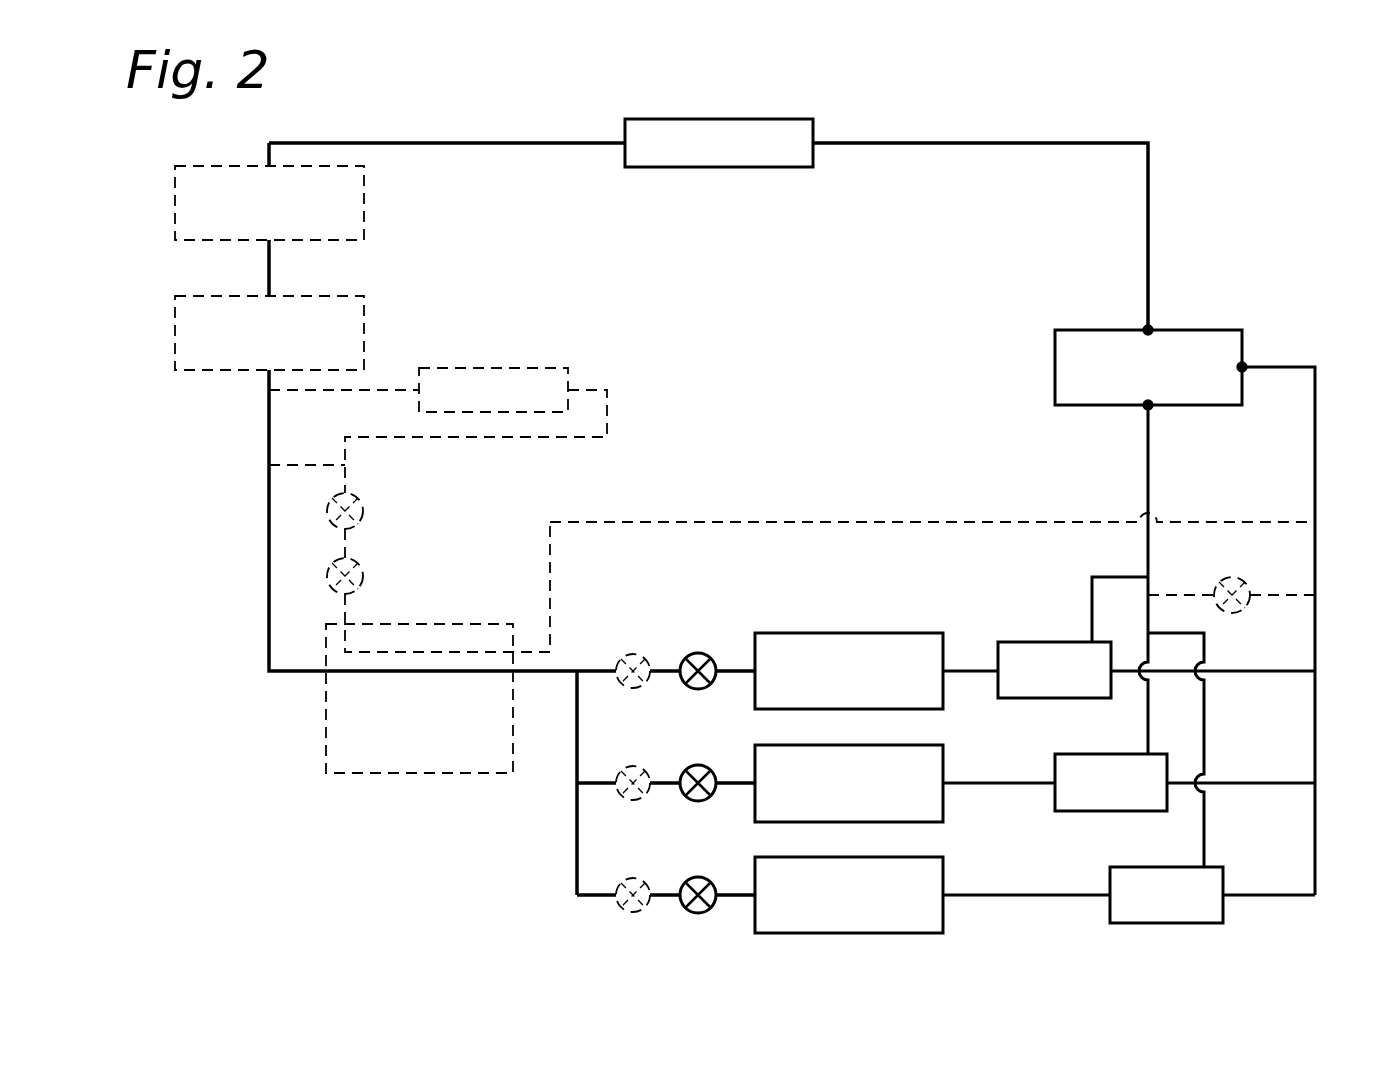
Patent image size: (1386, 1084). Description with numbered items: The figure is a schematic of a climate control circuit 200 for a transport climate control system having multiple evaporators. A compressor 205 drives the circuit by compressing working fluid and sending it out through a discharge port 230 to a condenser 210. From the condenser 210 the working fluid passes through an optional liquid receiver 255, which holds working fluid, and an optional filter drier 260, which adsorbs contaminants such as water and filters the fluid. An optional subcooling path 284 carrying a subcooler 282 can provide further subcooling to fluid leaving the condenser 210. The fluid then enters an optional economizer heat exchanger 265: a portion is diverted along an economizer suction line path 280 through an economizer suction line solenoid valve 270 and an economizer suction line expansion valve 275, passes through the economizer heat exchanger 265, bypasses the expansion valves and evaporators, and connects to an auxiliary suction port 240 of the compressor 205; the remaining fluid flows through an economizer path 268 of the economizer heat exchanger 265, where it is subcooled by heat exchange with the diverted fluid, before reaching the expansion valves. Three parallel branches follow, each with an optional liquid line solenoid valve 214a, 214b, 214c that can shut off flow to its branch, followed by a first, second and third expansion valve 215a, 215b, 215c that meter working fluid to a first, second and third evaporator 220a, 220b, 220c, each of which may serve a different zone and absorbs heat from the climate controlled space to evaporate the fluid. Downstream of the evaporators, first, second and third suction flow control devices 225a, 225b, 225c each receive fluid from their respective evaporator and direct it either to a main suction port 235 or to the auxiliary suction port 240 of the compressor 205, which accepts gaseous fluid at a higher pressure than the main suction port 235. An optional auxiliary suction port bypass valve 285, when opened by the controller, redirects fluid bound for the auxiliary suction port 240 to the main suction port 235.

The climate control circuit 200 is at (1273, 153).
The compressor 205 is at (1172, 345).
The condenser 210 is at (648, 119).
The first liquid line solenoid valve 214a is at (627, 654).
The second liquid line solenoid valve 214b is at (627, 766).
The third liquid line solenoid valve 214c is at (627, 879).
The first expansion valve 215a is at (710, 688).
The second expansion valve 215b is at (710, 800).
The third expansion valve 215c is at (710, 912).
The first evaporator 220a is at (927, 633).
The second evaporator 220b is at (927, 745).
The third evaporator 220c is at (927, 857).
The first suction flow control device 225a is at (1033, 698).
The second suction flow control device 225b is at (1087, 811).
The third suction flow control device 225c is at (1145, 923).
The discharge port 230 is at (1145, 326).
The main suction port 235 is at (1146, 410).
The auxiliary suction port 240 is at (1246, 364).
The liquid receiver 255 is at (207, 166).
The filter drier 260 is at (207, 296).
The economizer heat exchanger 265 is at (360, 773).
The economizer path 268 is at (498, 670).
The economizer suction line solenoid valve 270 is at (358, 498).
The economizer suction line expansion valve 275 is at (358, 562).
The economizer suction line path 280 is at (722, 520).
The subcooler 282 is at (512, 368).
The subcooling path 284 is at (598, 390).
The auxiliary suction port bypass valve 285 is at (1220, 578).